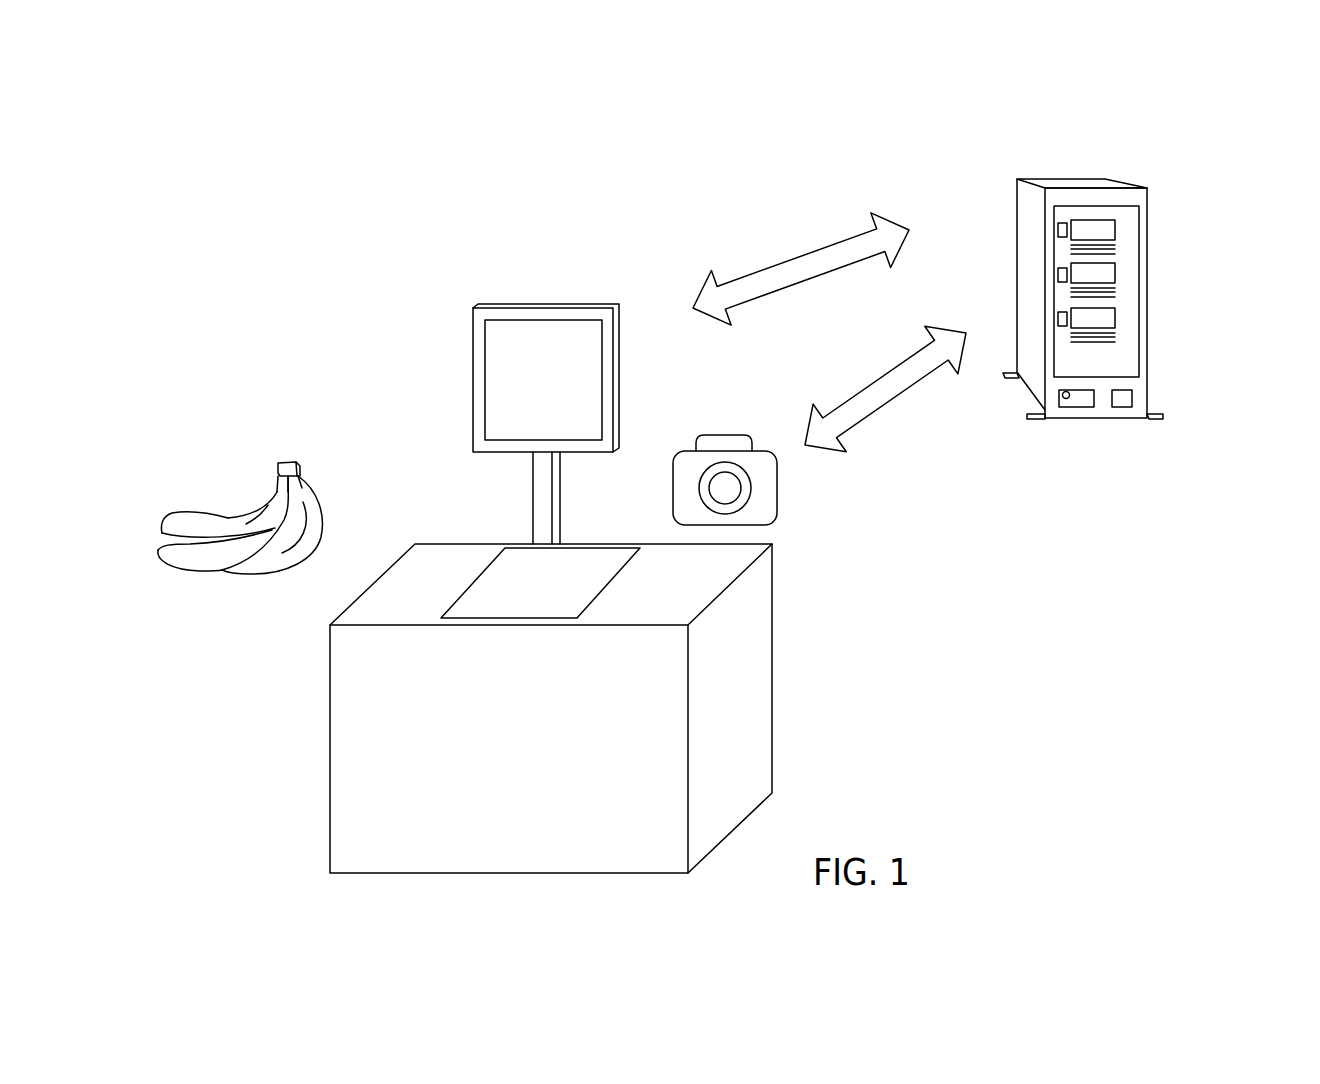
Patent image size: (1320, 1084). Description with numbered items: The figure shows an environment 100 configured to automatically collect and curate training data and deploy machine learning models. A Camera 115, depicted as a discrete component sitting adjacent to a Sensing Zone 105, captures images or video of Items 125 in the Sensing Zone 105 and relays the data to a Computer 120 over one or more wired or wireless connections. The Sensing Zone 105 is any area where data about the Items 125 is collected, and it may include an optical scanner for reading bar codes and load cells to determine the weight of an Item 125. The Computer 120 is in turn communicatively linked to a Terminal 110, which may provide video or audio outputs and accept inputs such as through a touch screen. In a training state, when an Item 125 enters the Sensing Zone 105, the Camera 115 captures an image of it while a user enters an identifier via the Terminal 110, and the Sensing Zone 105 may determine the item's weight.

The environment 100 is at (261, 172).
The sensing zone 105 is at (590, 598).
The terminal 110 is at (547, 308).
The camera 115 is at (777, 497).
The computer 120 is at (1125, 183).
The items 125 is at (300, 469).